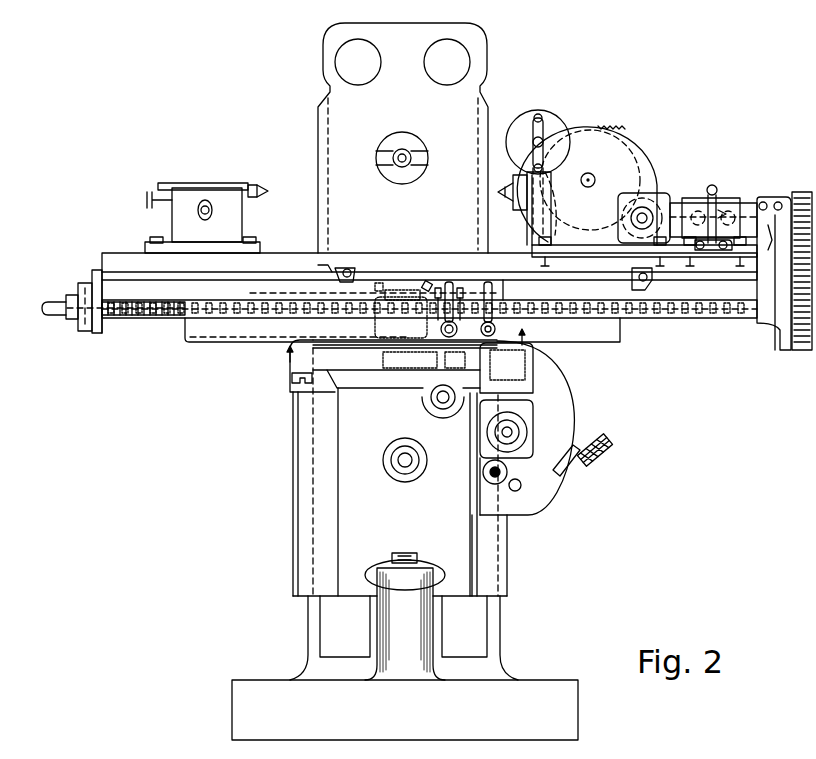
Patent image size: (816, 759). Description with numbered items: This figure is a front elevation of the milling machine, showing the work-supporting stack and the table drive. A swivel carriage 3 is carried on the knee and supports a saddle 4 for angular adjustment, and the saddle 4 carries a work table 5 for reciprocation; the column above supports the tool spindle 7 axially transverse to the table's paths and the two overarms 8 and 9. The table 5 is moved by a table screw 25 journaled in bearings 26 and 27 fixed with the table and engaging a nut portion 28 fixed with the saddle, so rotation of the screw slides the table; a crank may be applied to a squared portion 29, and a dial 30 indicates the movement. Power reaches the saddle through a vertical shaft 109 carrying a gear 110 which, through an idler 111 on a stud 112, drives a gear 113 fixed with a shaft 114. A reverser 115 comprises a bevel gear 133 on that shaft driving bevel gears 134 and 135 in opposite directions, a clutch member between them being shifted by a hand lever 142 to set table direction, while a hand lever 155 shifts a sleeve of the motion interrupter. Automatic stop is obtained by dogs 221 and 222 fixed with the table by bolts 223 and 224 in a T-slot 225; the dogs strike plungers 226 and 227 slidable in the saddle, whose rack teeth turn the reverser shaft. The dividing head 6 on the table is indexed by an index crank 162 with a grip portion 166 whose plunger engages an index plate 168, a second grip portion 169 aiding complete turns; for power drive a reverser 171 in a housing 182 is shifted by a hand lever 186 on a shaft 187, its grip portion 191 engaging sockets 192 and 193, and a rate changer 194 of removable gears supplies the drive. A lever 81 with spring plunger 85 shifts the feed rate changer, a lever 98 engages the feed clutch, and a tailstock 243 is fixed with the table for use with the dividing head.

The swivel carriage 3 is at (404, 343).
The saddle 4 is at (205, 340).
The work table 5 is at (290, 252).
The dividing head 6 is at (640, 128).
The tool spindle 7 is at (411, 150).
The overarm 8 is at (347, 58).
The overarm 9 is at (462, 62).
The table screw 25 is at (145, 320).
The bearing 26 is at (96, 326).
The bearing 27 is at (768, 335).
The nut portion 28 is at (300, 293).
The squared portion 29 is at (42, 312).
The dial 30 is at (70, 318).
The lever 81 is at (576, 462).
The spring plunger 85 is at (596, 448).
The lever 98 is at (502, 473).
The vertical shaft 109 is at (510, 380).
The gear 110 is at (525, 355).
The idler 111 is at (422, 377).
The stud 112 is at (456, 372).
The gear 113 is at (385, 375).
The shaft 114 is at (385, 357).
The reverser 115 is at (397, 288).
The bevel gear 133 is at (376, 325).
The bevel gear 134 is at (375, 287).
The bevel gear 135 is at (425, 288).
The hand lever 142 is at (452, 282).
The hand lever 155 is at (494, 288).
The index crank 162 is at (553, 116).
The grip portion 166 is at (540, 116).
The index plate 168 is at (562, 142).
The second grip portion 169 is at (548, 180).
The reverser 171 is at (726, 195).
The housing 182 is at (730, 203).
The hand lever 186 is at (688, 212).
The shaft 187 is at (714, 186).
The grip portion 191 is at (700, 250).
The socket 192 is at (712, 252).
The socket 193 is at (723, 250).
The rate changer 194 is at (799, 190).
The dog 221 is at (366, 264).
The dog 222 is at (636, 270).
The bolt 223 is at (318, 266).
The bolt 224 is at (634, 285).
The T-slot 225 is at (505, 278).
The plunger 226 is at (435, 290).
The plunger 227 is at (478, 290).
The tailstock 243 is at (222, 160).